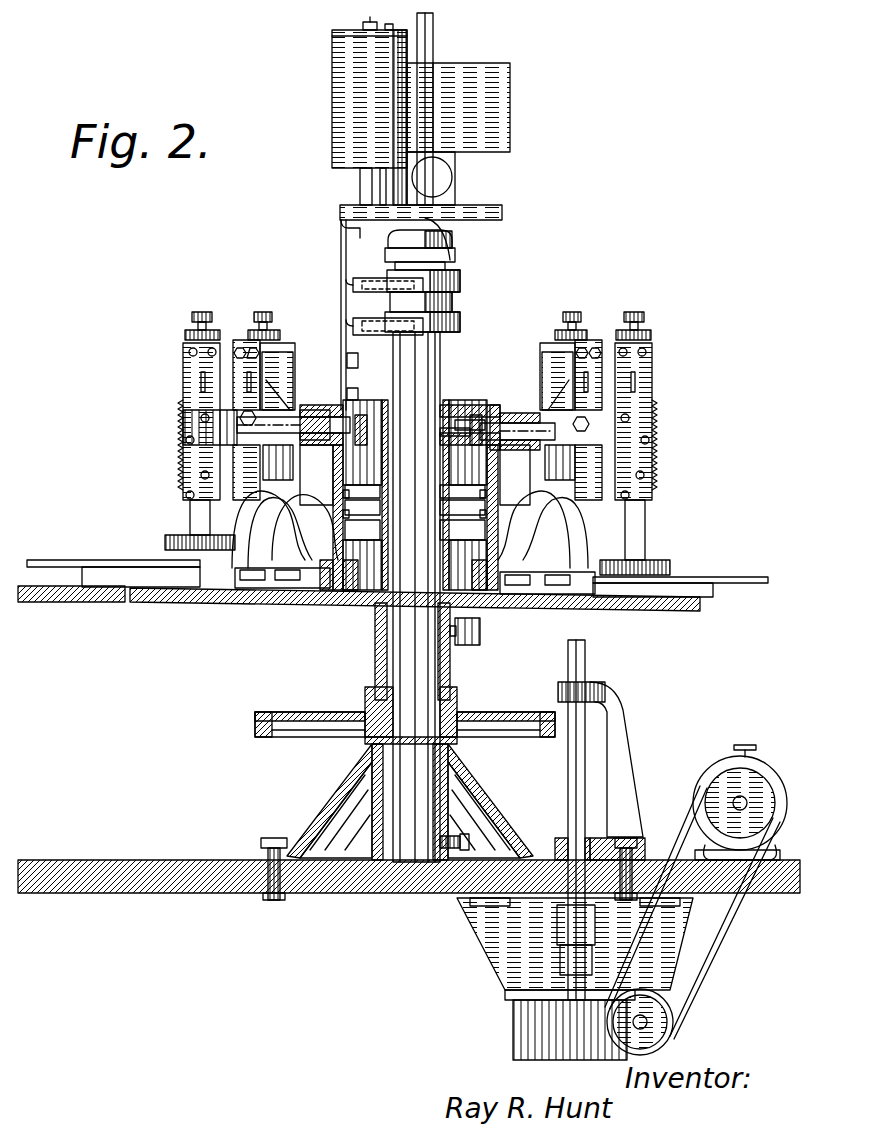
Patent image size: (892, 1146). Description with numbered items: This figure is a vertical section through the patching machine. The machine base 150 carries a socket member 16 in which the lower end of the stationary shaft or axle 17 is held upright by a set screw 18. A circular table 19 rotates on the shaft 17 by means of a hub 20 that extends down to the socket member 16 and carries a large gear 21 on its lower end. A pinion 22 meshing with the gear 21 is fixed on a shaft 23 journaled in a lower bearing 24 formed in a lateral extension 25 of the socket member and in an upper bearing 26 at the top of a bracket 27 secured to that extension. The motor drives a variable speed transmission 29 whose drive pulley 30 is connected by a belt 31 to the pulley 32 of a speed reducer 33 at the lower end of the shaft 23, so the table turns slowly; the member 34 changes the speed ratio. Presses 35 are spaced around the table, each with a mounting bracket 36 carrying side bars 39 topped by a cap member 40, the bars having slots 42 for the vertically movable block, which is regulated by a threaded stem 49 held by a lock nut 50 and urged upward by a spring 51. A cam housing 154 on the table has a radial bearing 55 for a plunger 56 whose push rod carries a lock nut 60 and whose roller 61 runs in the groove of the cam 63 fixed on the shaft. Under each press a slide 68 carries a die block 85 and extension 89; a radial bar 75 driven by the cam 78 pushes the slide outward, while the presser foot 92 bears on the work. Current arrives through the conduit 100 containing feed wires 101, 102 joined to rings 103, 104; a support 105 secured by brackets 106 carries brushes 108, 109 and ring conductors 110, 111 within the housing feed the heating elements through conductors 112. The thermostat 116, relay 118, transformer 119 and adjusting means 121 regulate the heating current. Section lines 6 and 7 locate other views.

The section line 6 is at (400, 560).
The section line 7 is at (317, 445).
The socket member 16 is at (322, 828).
The shaft or axle 17 is at (378, 628).
The set screw 18 is at (430, 840).
The circular table 19 is at (292, 607).
The hub 20 is at (373, 652).
The large gear 21 is at (282, 740).
The pinion 22 is at (558, 720).
The shaft 23 is at (586, 668).
The lower bearing 24 is at (556, 840).
The lateral extension 25 is at (648, 848).
The upper bearing 26 is at (560, 682).
The bracket 27 is at (628, 755).
The variable speed transmission 29 is at (781, 775).
The drive pulley 30 is at (728, 775).
The belt 31 is at (700, 985).
The pulley 32 is at (660, 1022).
The speed reducer 33 is at (522, 1022).
The member 34 is at (748, 745).
The presses 35 is at (258, 308).
The angular base or mounting bracket 36 is at (185, 497).
The side bars or plates 39 is at (597, 378).
The cap member 40 is at (238, 345).
The slots 42 is at (246, 384).
The threaded stem 49 is at (645, 328).
The lock nut 50 is at (652, 345).
The spring 51 is at (656, 474).
The radial bearing 55 is at (516, 423).
The plunger 56 is at (357, 415).
The lock nut 60 is at (295, 418).
The roller 61 is at (461, 420).
The cam 63 is at (462, 437).
The slide 68 is at (97, 592).
The radially extending bar 75 is at (277, 590).
The cam 78 is at (350, 600).
The die block 85 is at (130, 566).
The extension 89 is at (57, 560).
The foot 92 is at (178, 540).
The conduit 100 is at (433, 48).
The feed wire 101 is at (452, 248).
The feed wire 102 is at (455, 300).
The ring 103 is at (460, 284).
The ring 104 is at (460, 327).
The support 105 is at (502, 212).
The bracket 106 is at (341, 242).
The brush 108 is at (370, 278).
The brush 109 is at (373, 335).
The ring shaped conductor 110 is at (478, 510).
The ring shaped conductor 111 is at (470, 533).
The conductor 112 is at (318, 515).
The thermostat 116 is at (356, 74).
The relay 118 is at (505, 76).
The transformer 119 is at (455, 186).
The adjusting means 121 is at (365, 22).
The machine base 150 is at (372, 896).
The cylindrical shell or cam housing 154 is at (492, 405).